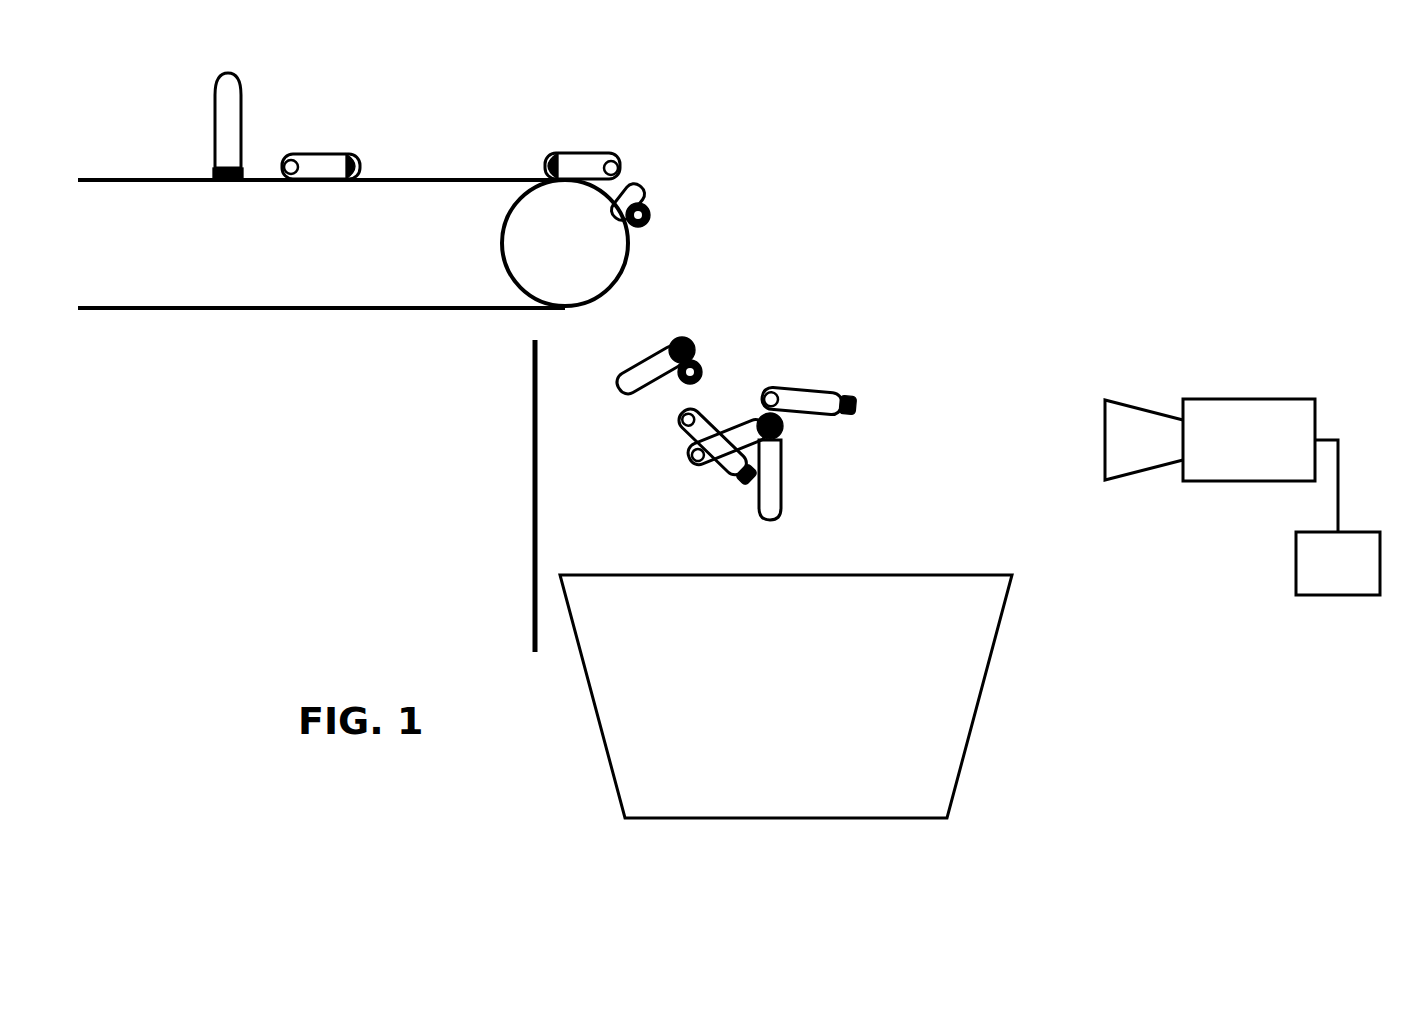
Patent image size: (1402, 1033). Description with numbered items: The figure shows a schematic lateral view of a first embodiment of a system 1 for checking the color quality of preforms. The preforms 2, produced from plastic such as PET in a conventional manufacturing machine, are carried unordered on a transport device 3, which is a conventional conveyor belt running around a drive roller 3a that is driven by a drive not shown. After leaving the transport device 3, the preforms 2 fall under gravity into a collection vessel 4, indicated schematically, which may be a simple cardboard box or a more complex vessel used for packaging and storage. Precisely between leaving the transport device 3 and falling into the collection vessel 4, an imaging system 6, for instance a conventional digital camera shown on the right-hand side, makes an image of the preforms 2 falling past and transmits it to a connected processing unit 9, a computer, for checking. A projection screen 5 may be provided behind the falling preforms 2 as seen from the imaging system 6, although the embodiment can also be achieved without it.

The system for checking the color quality of preforms 1 is at (827, 252).
The preforms 2 is at (333, 162).
The transport device 3 is at (300, 310).
The drive roller 3a is at (560, 253).
The collection vessel 4 is at (953, 687).
The projection screen 5 is at (535, 478).
The imaging system 6 is at (1232, 418).
The processing unit 9 is at (1323, 578).